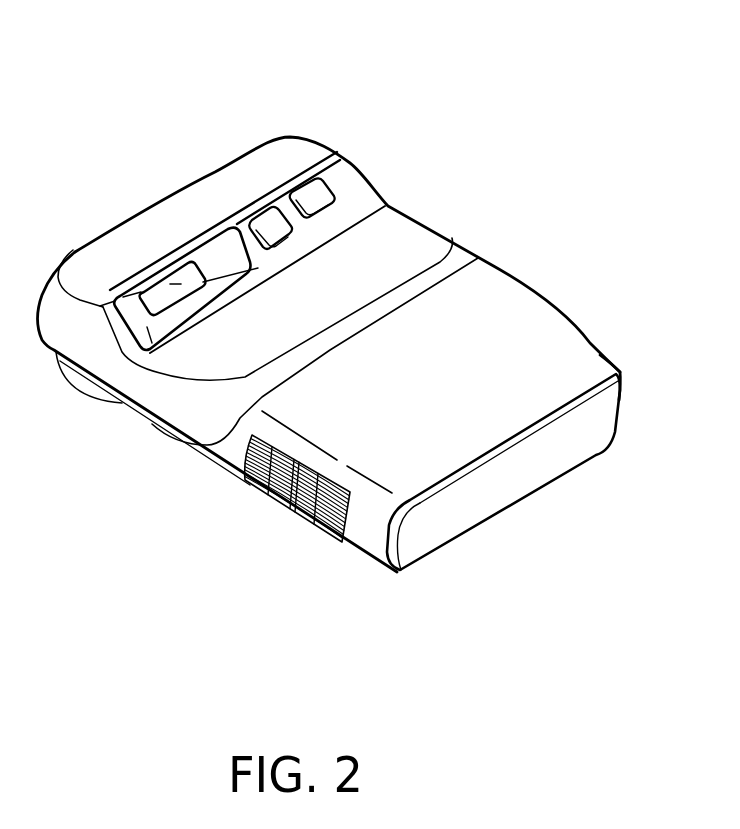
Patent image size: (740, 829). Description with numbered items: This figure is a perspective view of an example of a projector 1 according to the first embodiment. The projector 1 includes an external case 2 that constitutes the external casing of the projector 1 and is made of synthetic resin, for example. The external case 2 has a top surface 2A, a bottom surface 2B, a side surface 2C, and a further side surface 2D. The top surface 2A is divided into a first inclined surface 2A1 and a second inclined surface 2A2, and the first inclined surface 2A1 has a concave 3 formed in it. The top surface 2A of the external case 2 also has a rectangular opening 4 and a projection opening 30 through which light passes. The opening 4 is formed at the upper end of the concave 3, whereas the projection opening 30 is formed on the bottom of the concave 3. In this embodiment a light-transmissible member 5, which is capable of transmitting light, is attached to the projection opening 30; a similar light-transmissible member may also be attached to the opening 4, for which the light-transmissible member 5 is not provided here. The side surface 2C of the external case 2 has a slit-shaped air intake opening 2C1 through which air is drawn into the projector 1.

The projector 1 is at (347, 89).
The external case 2 is at (520, 280).
The top surface 2A is at (496, 349).
The first inclined surface 2A1 is at (357, 187).
The second inclined surface 2A2 is at (221, 357).
The bottom surface 2B is at (520, 503).
The side surface 2C is at (369, 549).
The air intake opening 2C1 is at (280, 493).
The side surface 2D is at (600, 347).
The concave 3 is at (220, 253).
The opening 4 is at (250, 252).
The light-transmissible member 5 is at (176, 282).
The projection opening 30 is at (146, 292).